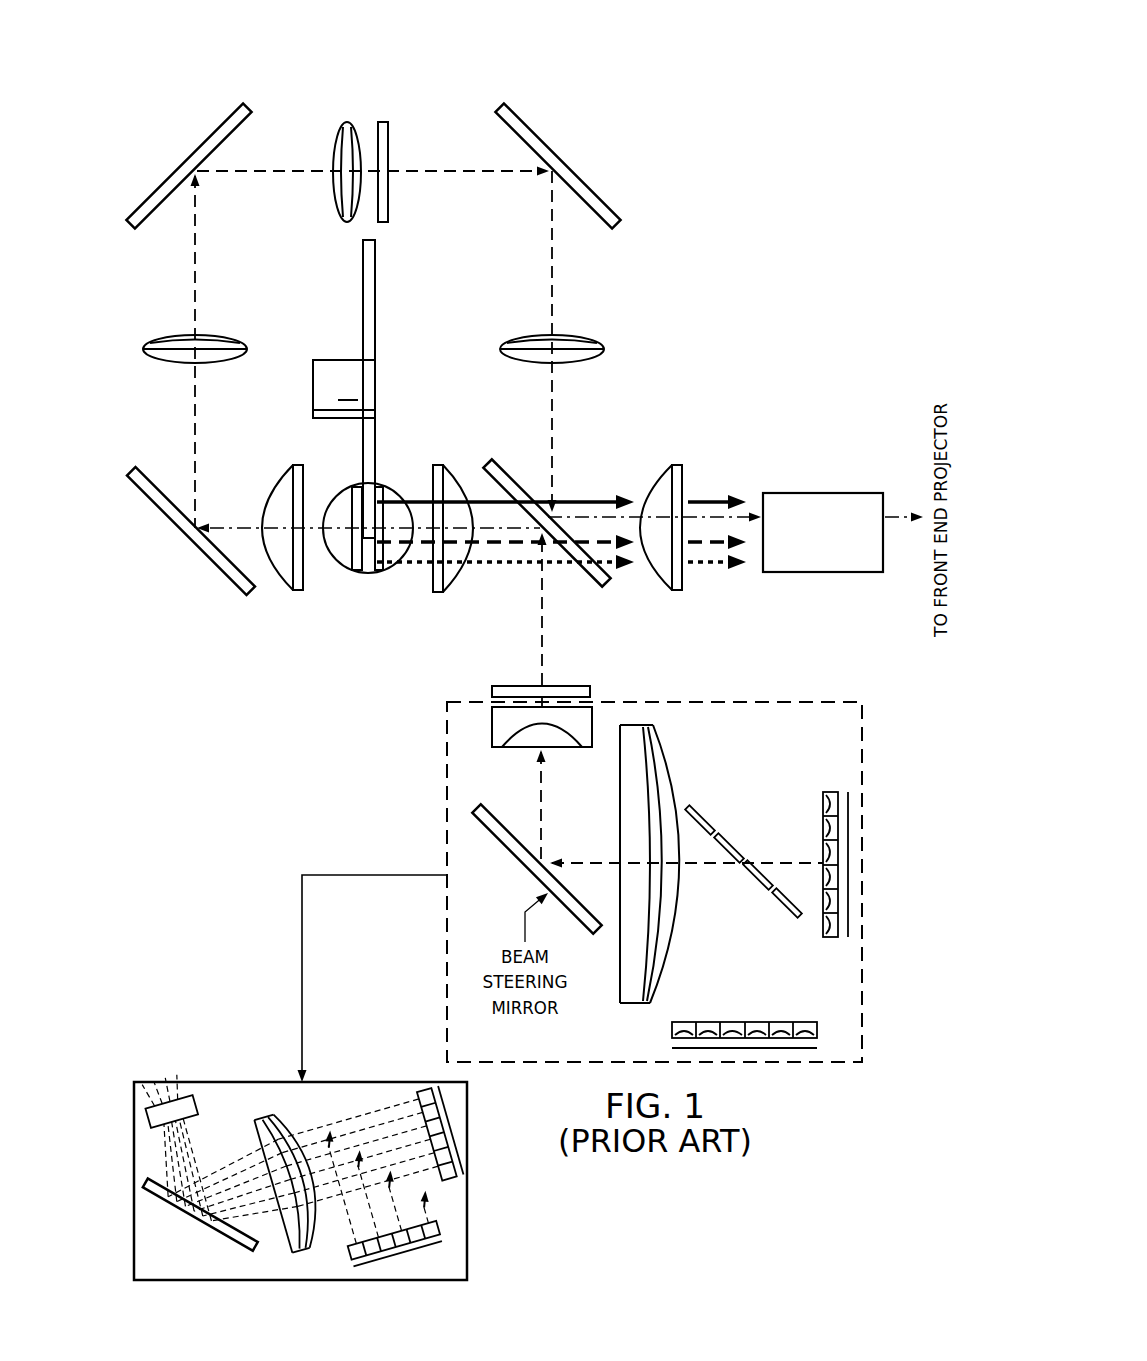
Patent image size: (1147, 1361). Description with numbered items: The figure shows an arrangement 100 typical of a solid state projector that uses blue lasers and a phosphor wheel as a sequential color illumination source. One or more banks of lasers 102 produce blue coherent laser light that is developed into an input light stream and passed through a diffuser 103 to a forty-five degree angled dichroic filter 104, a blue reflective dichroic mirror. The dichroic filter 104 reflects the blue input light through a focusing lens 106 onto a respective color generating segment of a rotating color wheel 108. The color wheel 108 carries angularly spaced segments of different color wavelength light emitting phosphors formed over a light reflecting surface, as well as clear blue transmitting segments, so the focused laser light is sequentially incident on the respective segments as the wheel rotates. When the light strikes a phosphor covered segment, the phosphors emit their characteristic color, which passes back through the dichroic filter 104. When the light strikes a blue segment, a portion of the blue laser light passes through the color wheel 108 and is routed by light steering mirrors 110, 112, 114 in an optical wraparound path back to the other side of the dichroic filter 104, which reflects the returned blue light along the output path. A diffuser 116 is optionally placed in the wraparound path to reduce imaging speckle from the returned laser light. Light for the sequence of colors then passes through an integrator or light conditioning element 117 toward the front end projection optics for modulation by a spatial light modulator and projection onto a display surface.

The arrangement 100 is at (720, 135).
The banks of lasers 102 is at (761, 1013).
The diffuser 103 is at (518, 686).
The dichroic filter 104 is at (612, 583).
The focusing lens 106 is at (402, 470).
The color wheel 108 is at (362, 332).
The mirror 110 is at (216, 562).
The mirror 112 is at (207, 143).
The mirror 114 is at (544, 143).
The diffuser 116 is at (390, 142).
The integrator 117 is at (826, 574).